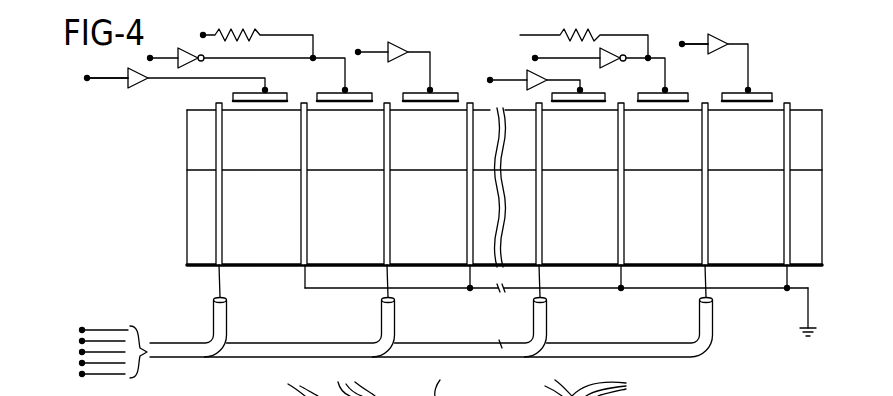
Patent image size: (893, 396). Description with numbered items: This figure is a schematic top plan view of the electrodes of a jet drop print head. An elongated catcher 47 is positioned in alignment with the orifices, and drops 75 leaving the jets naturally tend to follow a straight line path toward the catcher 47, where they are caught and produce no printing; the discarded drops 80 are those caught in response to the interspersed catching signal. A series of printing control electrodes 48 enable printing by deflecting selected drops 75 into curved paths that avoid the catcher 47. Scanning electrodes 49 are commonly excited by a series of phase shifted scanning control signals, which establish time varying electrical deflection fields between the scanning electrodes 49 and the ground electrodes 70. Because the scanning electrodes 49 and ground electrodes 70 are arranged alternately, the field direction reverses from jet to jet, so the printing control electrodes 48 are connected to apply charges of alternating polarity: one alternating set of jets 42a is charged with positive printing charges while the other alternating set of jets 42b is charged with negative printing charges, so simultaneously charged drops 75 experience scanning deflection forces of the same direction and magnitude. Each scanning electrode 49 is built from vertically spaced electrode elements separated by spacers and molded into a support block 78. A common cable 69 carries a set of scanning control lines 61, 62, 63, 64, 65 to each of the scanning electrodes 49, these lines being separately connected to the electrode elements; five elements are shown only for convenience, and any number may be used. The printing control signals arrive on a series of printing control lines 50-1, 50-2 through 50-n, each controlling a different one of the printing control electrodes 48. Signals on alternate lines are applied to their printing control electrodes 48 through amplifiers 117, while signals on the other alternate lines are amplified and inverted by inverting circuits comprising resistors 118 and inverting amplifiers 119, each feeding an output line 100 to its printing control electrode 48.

The catcher 47 is at (807, 138).
The printing control electrodes 48 is at (270, 97).
The scanning electrodes 49 is at (216, 205).
The jets 42a is at (266, 135).
The jets 42b is at (352, 135).
The printing control line 50-1 is at (112, 80).
The printing control line 50-2 is at (162, 60).
The printing control line 50-n is at (693, 43).
The output line 100 is at (432, 88).
The amplifiers 117 is at (130, 73).
The resistors 118 is at (255, 34).
The inverting amplifiers 119 is at (200, 63).
The scanning control line 61 is at (95, 330).
The scanning control line 62 is at (107, 340).
The scanning control line 63 is at (118, 350).
The scanning control line 64 is at (100, 365).
The scanning control line 65 is at (115, 375).
The common cable 69 is at (178, 345).
The ground electrodes 70 is at (300, 250).
The support block 78 is at (208, 248).
The discarded drops 80 is at (417, 381).
The drops 75 is at (488, 382).